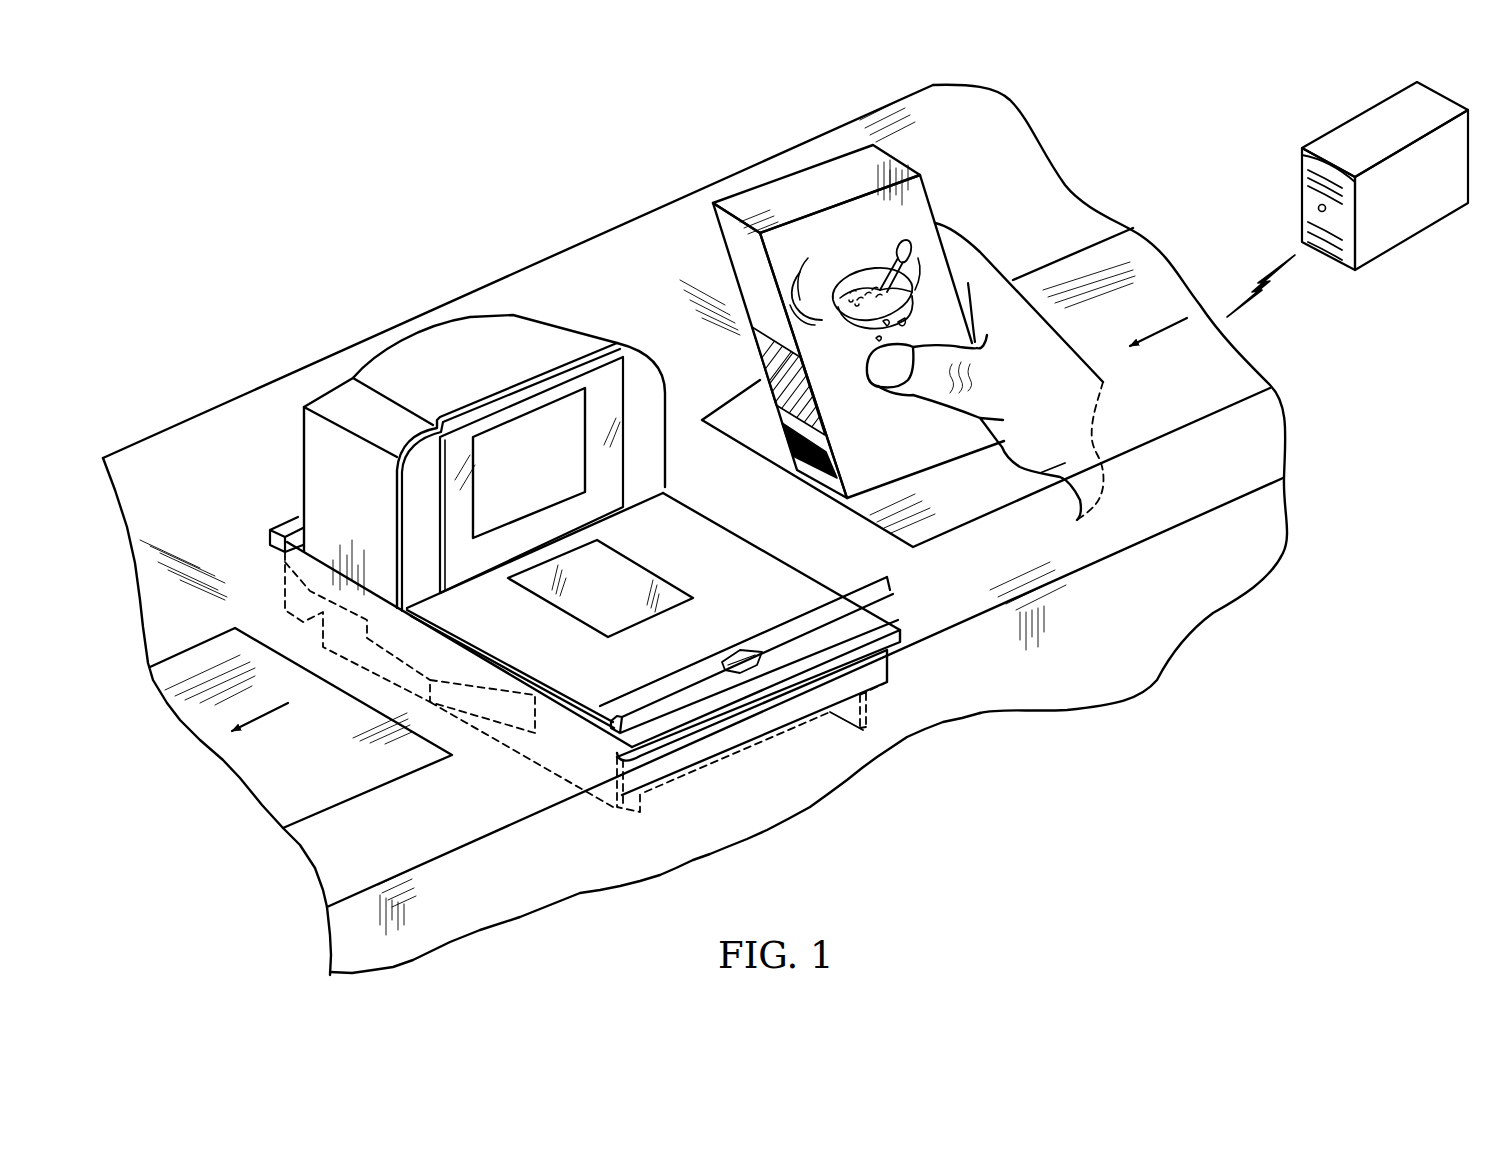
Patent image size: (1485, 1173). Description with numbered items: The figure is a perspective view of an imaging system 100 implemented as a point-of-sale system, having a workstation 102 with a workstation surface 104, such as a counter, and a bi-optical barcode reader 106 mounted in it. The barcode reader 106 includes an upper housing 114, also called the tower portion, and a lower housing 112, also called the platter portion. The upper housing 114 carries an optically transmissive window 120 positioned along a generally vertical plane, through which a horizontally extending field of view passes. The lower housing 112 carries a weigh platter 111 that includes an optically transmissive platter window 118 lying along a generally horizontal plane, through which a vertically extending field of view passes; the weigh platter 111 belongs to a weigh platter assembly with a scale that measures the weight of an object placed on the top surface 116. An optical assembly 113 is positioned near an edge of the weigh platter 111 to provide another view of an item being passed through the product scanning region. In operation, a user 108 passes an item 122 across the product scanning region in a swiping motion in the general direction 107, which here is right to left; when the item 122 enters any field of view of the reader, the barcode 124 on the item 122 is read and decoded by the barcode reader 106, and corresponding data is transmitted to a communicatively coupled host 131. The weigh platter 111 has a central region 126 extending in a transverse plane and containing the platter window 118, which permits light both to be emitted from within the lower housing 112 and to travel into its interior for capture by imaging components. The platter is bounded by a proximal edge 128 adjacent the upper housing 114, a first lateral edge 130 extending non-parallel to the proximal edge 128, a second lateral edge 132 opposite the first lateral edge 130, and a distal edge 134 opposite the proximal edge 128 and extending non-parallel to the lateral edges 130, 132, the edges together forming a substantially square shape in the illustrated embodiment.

The imaging system 100 is at (198, 356).
The workstation 102 is at (588, 228).
The workstation surface 104 is at (913, 302).
The bi-optical barcode reader 106 is at (314, 490).
The general direction 107 is at (1163, 333).
The user 108 is at (1072, 370).
The weigh platter 111 is at (823, 603).
The lower housing 112 is at (600, 818).
The optical assembly 113 is at (752, 650).
The upper housing 114 is at (447, 452).
The top surface 116 is at (593, 697).
The platter window 118 is at (660, 605).
The optically transmissive window 120 is at (520, 443).
The item 122 is at (933, 260).
The barcode 124 is at (835, 453).
The central region 126 is at (668, 662).
The proximal edge 128 is at (617, 513).
The first lateral edge 130 is at (433, 627).
The host 131 is at (1300, 192).
The second lateral edge 132 is at (773, 557).
The distal edge 134 is at (645, 704).